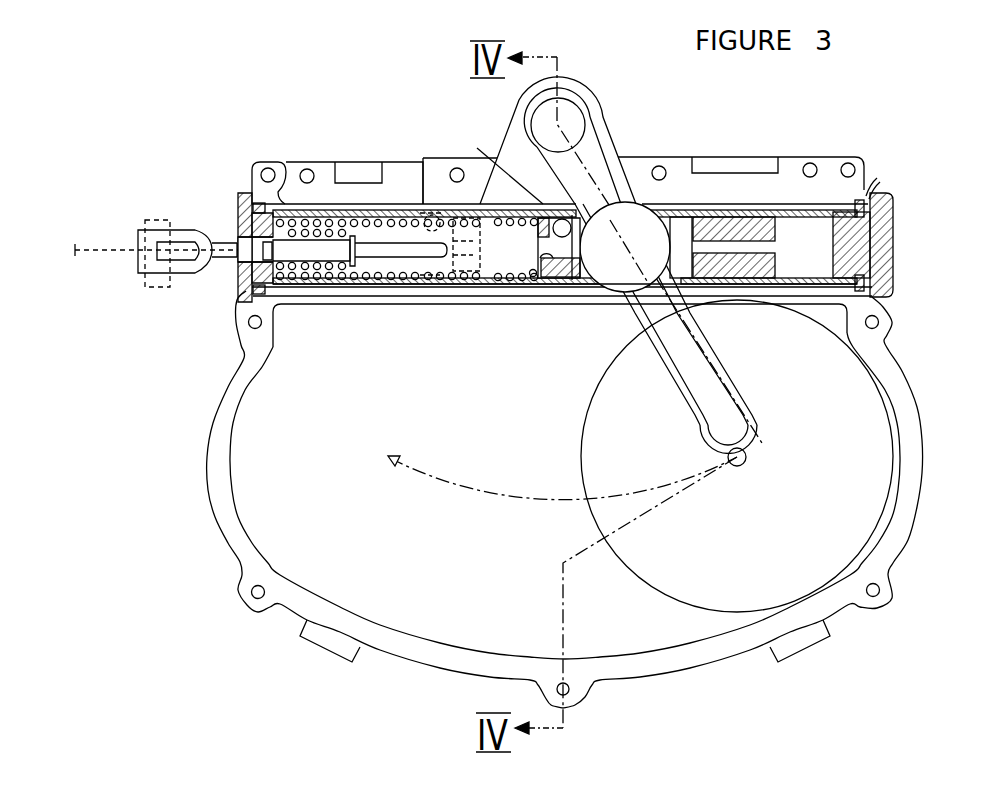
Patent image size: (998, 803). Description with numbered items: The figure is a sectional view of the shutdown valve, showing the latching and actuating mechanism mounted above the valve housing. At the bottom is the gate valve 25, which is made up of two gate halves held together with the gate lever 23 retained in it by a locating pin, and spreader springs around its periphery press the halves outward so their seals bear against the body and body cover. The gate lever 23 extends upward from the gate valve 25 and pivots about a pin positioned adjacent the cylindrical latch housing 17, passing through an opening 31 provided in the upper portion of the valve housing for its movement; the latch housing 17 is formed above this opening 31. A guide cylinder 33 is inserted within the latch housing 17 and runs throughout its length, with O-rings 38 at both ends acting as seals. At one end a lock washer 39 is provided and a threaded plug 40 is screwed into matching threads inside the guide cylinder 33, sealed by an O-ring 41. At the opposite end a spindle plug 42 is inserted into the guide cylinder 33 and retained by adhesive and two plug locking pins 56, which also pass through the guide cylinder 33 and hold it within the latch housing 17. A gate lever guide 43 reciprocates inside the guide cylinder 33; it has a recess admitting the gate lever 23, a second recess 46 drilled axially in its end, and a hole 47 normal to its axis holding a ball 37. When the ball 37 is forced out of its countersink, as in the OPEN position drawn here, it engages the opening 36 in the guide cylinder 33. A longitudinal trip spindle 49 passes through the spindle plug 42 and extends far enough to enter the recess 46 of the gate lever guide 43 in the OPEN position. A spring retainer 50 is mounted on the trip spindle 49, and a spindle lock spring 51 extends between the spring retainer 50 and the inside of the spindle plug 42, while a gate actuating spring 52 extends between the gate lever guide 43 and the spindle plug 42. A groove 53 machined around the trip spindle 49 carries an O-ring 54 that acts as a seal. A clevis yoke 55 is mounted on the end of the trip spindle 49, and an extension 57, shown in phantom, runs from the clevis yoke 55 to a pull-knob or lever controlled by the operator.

The latch housing 17 is at (860, 206).
The gate lever 23 is at (627, 157).
The gate valve 25 is at (883, 338).
The opening 31 is at (500, 288).
The guide cylinder 33 is at (692, 204).
The opening 36 is at (416, 208).
The ball 37 is at (494, 132).
The O-rings 38 is at (262, 205).
The lock washer 39 is at (870, 196).
The threaded plug 40 is at (893, 250).
The O-ring 41 is at (890, 228).
The spindle plug 42 is at (240, 230).
The gate lever guide 43 is at (778, 233).
The second recess 46 is at (537, 236).
The hole 47 is at (557, 212).
The trip spindle 49 is at (445, 277).
The spring retainer 50 is at (388, 212).
The spindle lock spring 51 is at (305, 262).
The gate actuating spring 52 is at (358, 266).
The groove 53 is at (238, 273).
The O-ring 54 is at (262, 230).
The clevis yoke 55 is at (238, 235).
The plug locking pins 56 is at (241, 288).
The extension 57 is at (120, 250).